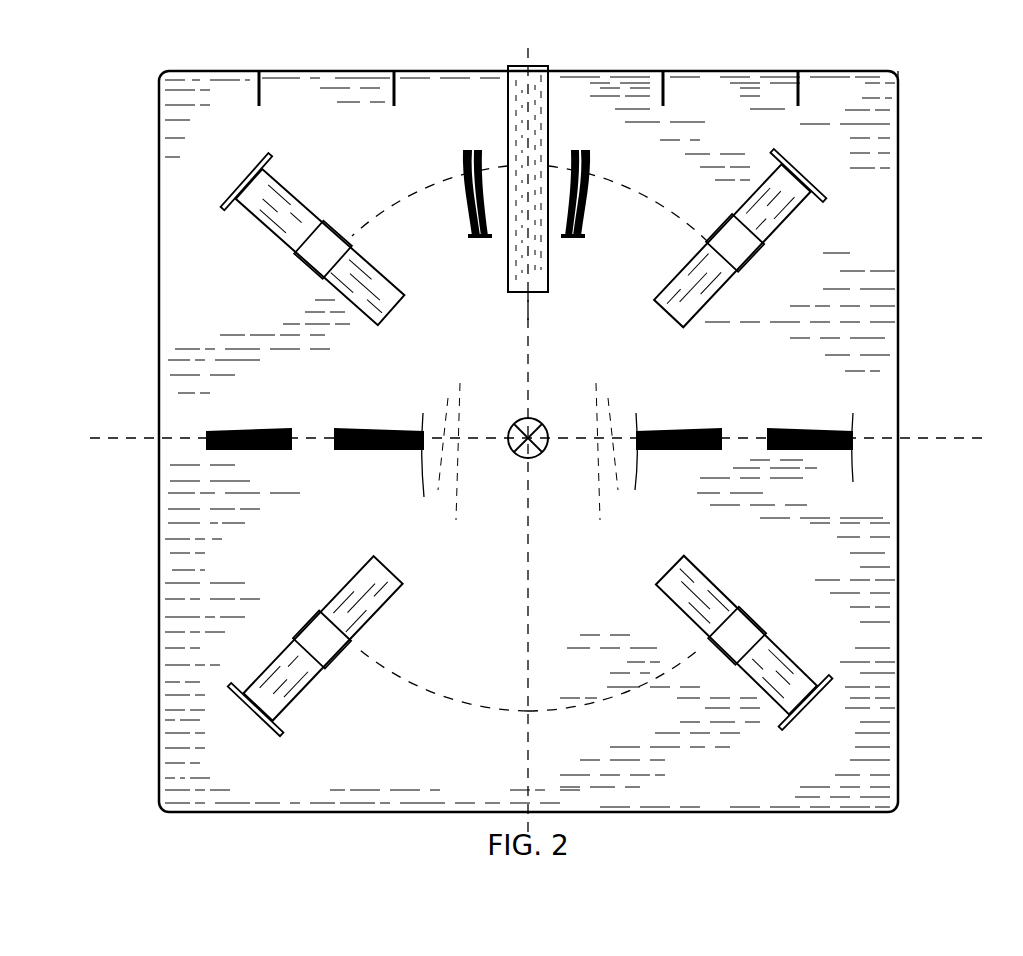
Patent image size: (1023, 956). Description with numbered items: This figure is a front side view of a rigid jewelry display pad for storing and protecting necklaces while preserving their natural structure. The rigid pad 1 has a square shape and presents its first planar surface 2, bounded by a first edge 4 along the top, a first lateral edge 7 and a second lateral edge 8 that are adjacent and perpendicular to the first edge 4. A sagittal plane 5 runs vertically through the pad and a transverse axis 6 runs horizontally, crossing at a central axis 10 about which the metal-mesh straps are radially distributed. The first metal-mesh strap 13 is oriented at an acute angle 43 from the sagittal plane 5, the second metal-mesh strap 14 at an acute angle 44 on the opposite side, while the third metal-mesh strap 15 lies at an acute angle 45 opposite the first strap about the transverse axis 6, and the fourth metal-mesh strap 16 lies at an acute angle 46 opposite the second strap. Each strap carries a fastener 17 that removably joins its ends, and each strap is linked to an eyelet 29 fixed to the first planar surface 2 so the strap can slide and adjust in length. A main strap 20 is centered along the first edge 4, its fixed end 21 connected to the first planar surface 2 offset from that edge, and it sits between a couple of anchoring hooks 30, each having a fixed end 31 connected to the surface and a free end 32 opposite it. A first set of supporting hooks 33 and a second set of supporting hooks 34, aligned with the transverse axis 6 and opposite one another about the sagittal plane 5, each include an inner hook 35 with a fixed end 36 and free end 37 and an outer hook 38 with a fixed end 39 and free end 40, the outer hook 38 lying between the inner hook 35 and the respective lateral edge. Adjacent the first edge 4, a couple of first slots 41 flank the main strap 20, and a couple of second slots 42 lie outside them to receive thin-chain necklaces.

The rigid pad 1 is at (156, 66).
The first planar surface 2 is at (873, 220).
The first edge 4 is at (872, 71).
The sagittal plane 5 is at (526, 345).
The transverse axis 6 is at (90, 438).
The first lateral edge 7 is at (898, 342).
The second lateral edge 8 is at (160, 270).
The central axis 10 is at (540, 456).
The first metal-mesh strap 13 is at (760, 232).
The second metal-mesh strap 14 is at (290, 240).
The third metal-mesh strap 15 is at (690, 600).
The fourth metal-mesh strap 16 is at (355, 618).
The fastener 17 is at (303, 262).
The main strap 20 is at (549, 282).
The fixed end 21 is at (538, 292).
The eyelet 29 is at (270, 163).
The anchoring hook 30 is at (490, 210).
The fixed end 31 is at (475, 233).
The free end 32 is at (478, 148).
The first set of supporting hooks 33 is at (718, 410).
The second set of supporting hooks 34 is at (345, 410).
The inner hook 35 is at (395, 428).
The fixed end 36 is at (418, 452).
The free end 37 is at (340, 452).
The outer hook 38 is at (250, 428).
The fixed end 39 is at (205, 438).
The free end 40 is at (293, 425).
The first slot 41 is at (394, 102).
The second slot 42 is at (259, 102).
The acute angle 43 is at (632, 190).
The acute angle 44 is at (410, 190).
The acute angle 45 is at (600, 705).
The acute angle 46 is at (455, 705).